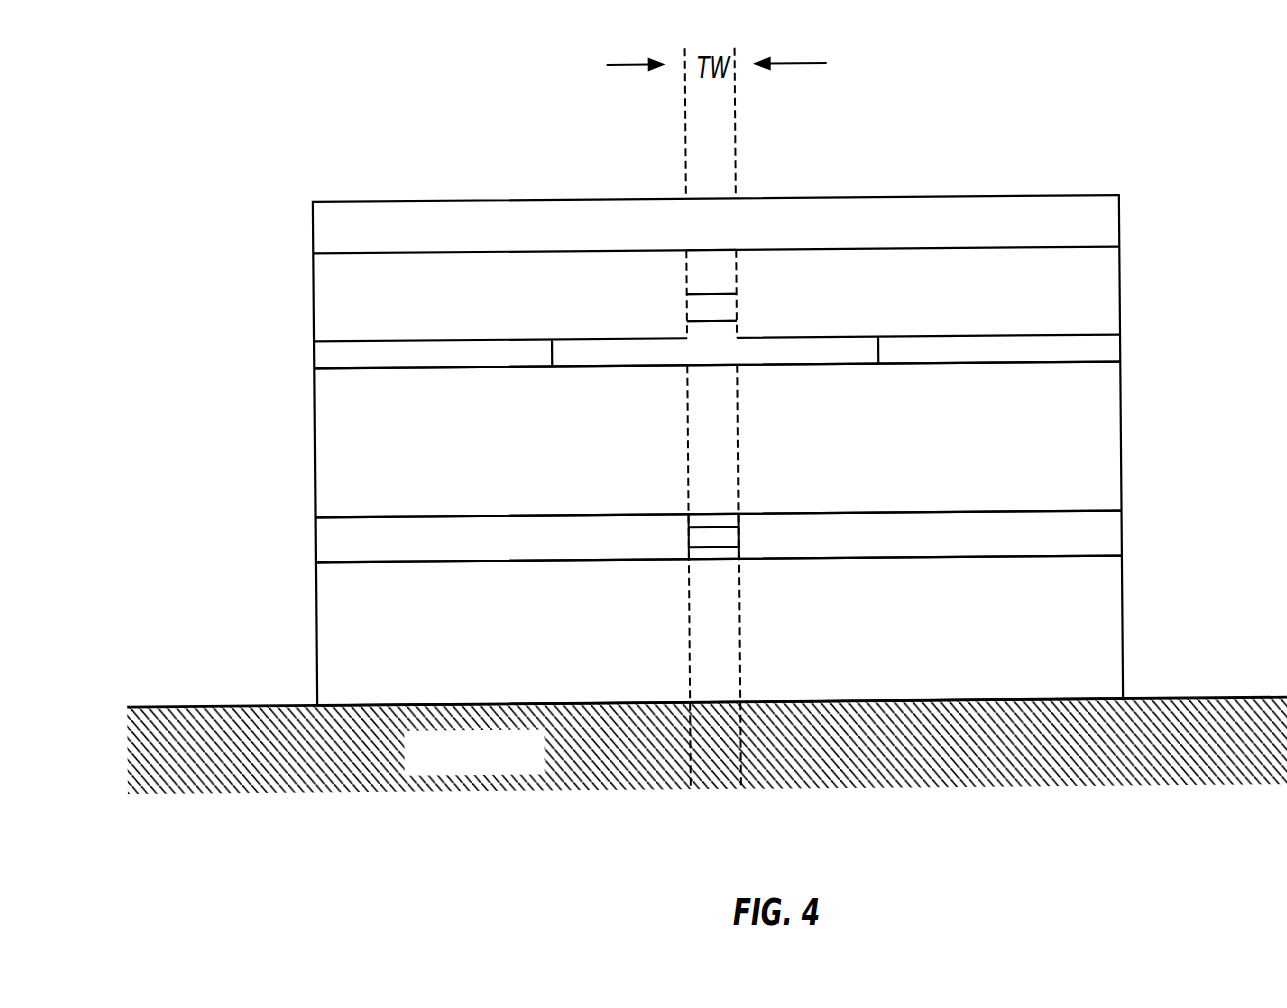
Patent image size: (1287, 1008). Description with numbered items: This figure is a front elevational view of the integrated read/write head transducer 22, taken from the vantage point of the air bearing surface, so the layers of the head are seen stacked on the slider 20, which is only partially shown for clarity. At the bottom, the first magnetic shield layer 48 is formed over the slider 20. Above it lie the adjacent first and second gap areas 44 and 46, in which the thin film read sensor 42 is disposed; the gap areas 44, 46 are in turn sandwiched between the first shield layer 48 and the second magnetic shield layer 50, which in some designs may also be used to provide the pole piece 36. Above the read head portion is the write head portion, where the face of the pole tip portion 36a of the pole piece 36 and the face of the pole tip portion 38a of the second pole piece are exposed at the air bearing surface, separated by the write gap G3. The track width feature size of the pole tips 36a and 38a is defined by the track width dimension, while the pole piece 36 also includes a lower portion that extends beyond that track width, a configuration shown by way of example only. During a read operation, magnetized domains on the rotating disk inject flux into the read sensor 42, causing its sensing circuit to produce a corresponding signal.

The slider 20 is at (197, 705).
The transducer 22 is at (1203, 105).
The pole piece 36 is at (612, 337).
The pole tip portion 36a is at (731, 337).
The pole tip portion 38a is at (716, 259).
The thin film read sensor 42 is at (718, 532).
The G1 gap area 44 is at (657, 531).
The G2 gap area 46 is at (313, 540).
The first (S1) magnetic shield layer 48 is at (313, 634).
The second (S2) magnetic shield layer 50 is at (313, 463).
The write gap G3 is at (729, 305).